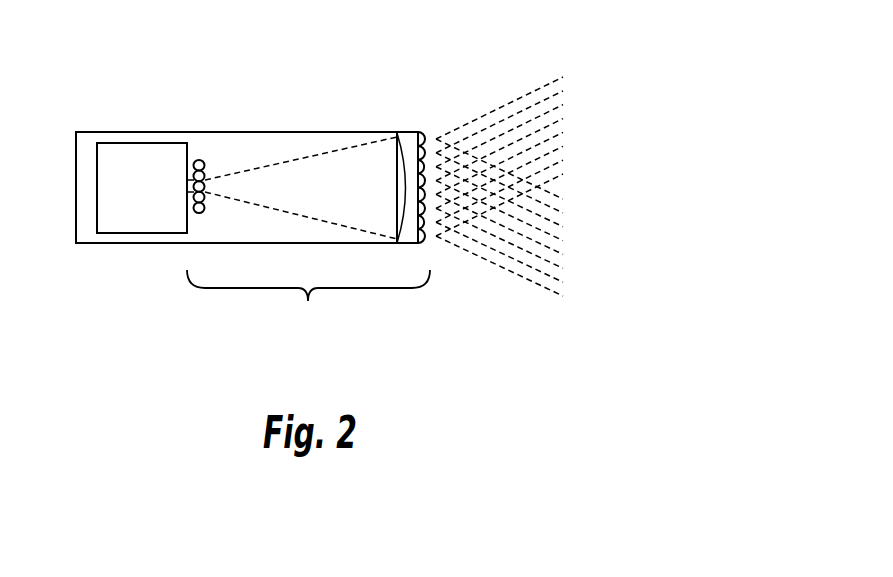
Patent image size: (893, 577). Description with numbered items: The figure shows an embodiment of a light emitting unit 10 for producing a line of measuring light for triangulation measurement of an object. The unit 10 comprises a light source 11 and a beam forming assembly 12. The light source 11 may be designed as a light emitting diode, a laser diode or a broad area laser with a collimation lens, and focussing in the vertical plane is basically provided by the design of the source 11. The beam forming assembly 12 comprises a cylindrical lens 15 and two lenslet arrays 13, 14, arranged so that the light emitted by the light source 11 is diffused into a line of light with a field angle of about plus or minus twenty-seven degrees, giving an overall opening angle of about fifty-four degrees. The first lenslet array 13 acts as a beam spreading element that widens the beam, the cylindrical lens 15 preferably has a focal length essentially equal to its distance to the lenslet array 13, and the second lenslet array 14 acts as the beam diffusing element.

The light emitting unit 10 is at (138, 79).
The light source 11 is at (123, 220).
The beam forming assembly 12 is at (308, 304).
The first lenslet array 13 is at (235, 146).
The second lenslet array 14 is at (388, 143).
The cylindrical lens 15 is at (368, 167).